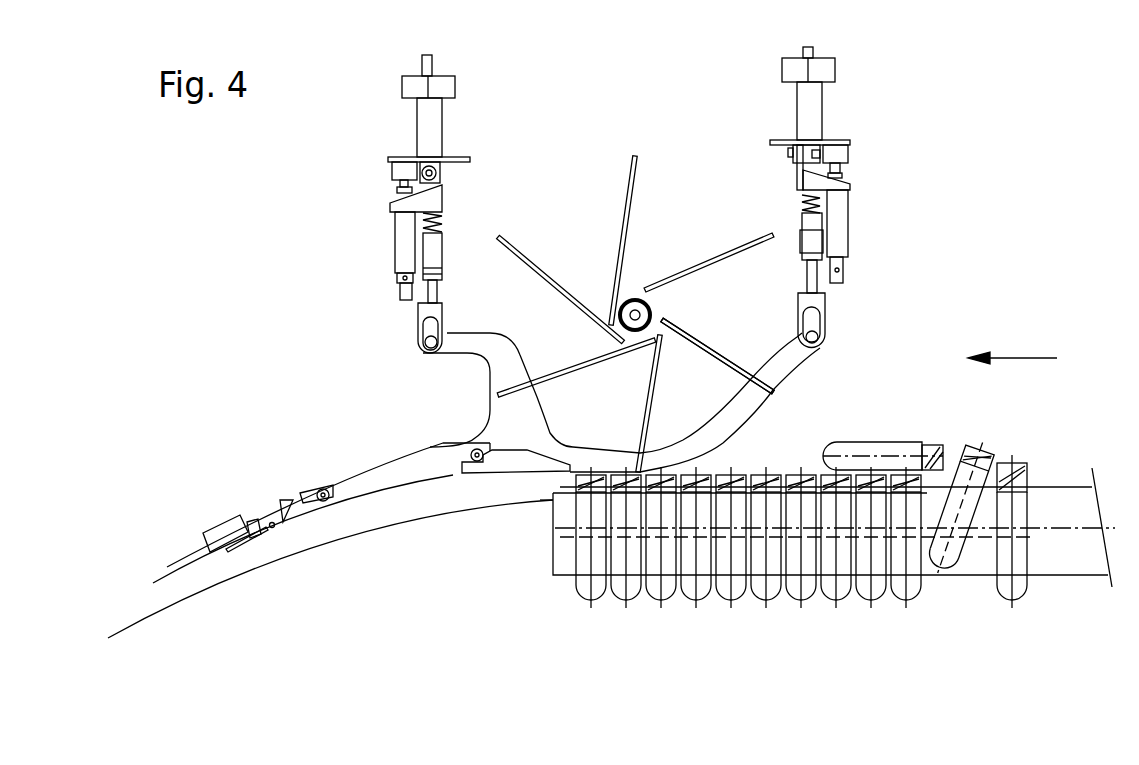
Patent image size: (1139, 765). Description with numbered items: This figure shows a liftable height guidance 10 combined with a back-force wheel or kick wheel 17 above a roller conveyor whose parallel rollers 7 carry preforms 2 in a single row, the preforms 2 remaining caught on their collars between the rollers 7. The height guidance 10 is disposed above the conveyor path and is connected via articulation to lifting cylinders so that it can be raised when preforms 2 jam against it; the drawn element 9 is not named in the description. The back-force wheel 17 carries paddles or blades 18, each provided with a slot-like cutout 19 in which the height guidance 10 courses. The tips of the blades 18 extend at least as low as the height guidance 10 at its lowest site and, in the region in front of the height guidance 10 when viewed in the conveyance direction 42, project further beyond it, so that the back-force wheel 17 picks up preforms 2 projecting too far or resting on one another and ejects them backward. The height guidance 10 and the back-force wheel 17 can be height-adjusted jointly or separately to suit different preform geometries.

The preform 2 is at (880, 447).
The roller 7 is at (1082, 550).
The guide rail 9 is at (283, 548).
The height guidance 10 is at (500, 420).
The back-force wheel 17 is at (647, 280).
The blade 18 is at (517, 247).
The slot-like cutout 19 is at (773, 390).
The conveyance direction 42 is at (1012, 358).